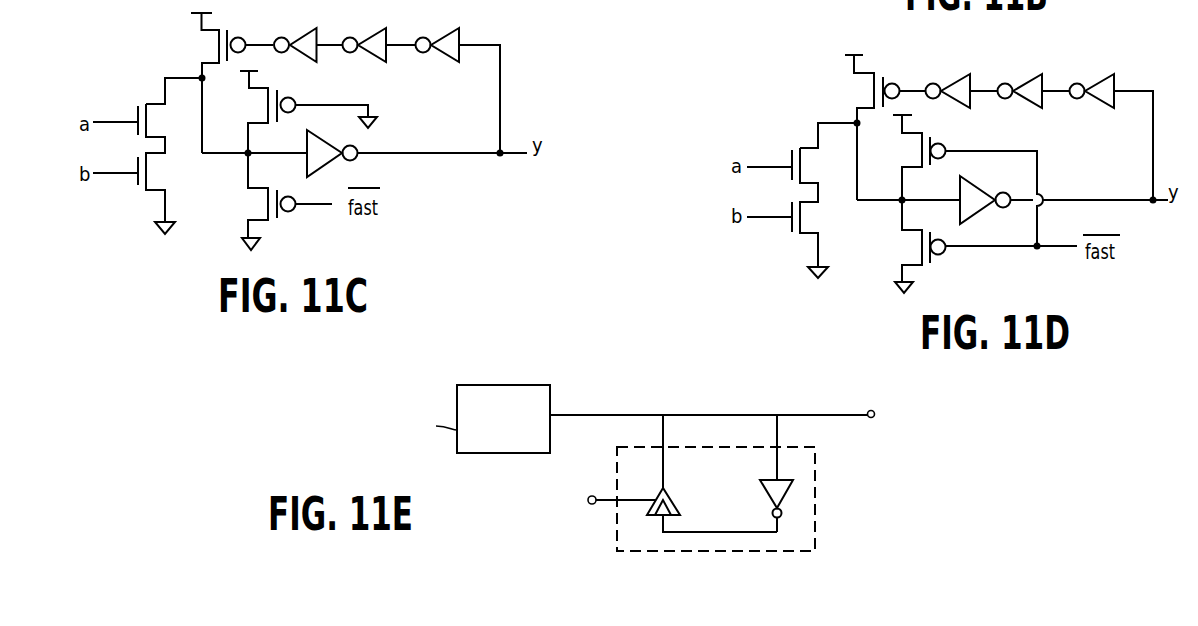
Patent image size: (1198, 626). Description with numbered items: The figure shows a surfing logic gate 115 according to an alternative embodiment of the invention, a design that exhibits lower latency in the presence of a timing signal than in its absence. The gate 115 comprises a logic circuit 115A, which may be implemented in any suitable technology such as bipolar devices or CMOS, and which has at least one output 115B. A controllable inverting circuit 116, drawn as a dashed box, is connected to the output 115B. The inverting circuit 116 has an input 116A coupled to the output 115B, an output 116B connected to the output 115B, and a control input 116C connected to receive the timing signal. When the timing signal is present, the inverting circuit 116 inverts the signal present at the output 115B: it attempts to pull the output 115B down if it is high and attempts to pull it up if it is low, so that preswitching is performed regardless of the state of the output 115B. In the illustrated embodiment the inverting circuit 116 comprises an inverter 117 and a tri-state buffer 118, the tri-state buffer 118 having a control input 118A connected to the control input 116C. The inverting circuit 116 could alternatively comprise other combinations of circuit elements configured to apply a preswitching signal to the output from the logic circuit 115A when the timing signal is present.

The surfing logic gate 115 is at (540, 366).
The logic circuit 115A is at (437, 426).
The output 115B is at (592, 414).
The controllable inverting circuit 116 is at (816, 478).
The input 116A is at (777, 428).
The output 116B is at (662, 425).
The control input 116C is at (600, 507).
The inverter 117 is at (782, 493).
The tri-state buffer 118 is at (653, 518).
The control input 118A is at (641, 500).